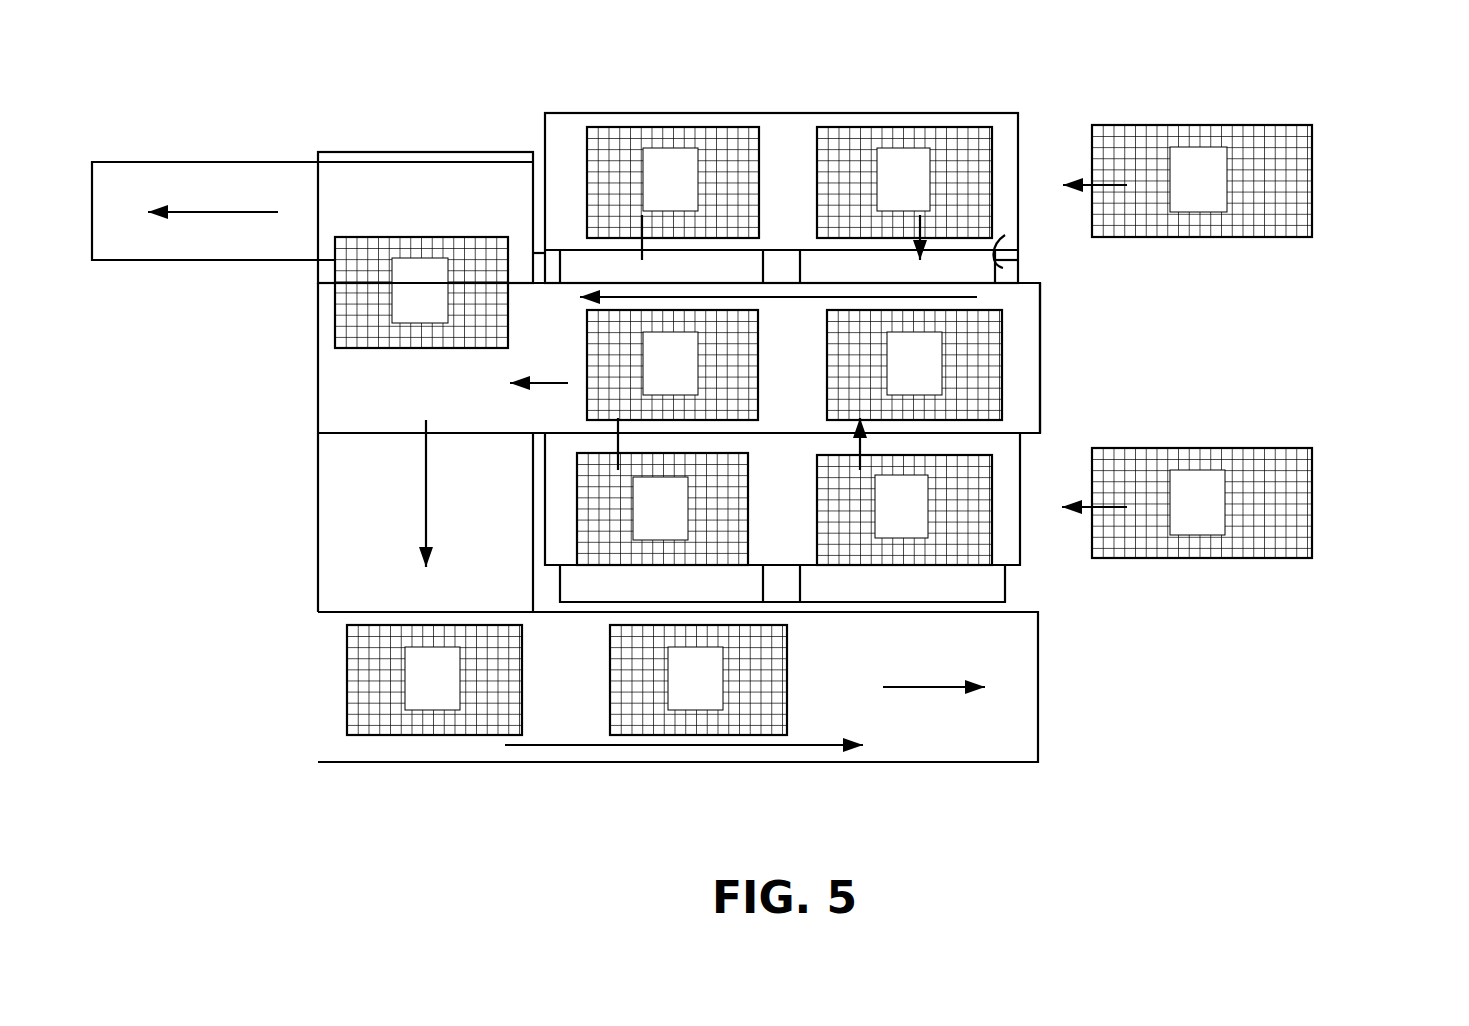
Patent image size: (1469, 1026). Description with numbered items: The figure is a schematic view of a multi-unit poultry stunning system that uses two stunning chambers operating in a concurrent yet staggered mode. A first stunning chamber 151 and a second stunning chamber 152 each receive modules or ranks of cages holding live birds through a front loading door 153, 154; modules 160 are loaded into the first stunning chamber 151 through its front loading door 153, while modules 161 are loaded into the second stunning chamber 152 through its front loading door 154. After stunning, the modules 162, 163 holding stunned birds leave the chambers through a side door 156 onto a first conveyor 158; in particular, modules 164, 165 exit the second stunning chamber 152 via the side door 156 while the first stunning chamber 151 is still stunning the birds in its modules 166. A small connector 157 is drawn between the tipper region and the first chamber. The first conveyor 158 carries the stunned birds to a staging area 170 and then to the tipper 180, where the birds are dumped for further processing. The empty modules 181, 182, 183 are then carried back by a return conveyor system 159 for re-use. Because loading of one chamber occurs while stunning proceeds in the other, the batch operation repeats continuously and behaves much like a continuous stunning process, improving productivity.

The first stunning chamber 151 is at (1003, 268).
The second stunning chamber 152 is at (1008, 450).
The front loading door 153 is at (1020, 133).
The front loading door 154 is at (1022, 545).
The side door 156 is at (550, 433).
The connector 157 is at (541, 265).
The first conveyor 158 is at (1025, 352).
The return conveyor system 159 is at (347, 558).
The module 160 is at (1313, 175).
The module 161 is at (1315, 505).
The module 162 is at (612, 320).
The module 163 is at (975, 330).
The module 164 is at (592, 550).
The module 165 is at (908, 553).
The module 166 is at (683, 135).
The staging area 170 is at (405, 380).
The tipper 180 is at (415, 187).
The empty module 181 is at (352, 298).
The empty module 182 is at (385, 727).
The empty module 183 is at (666, 727).